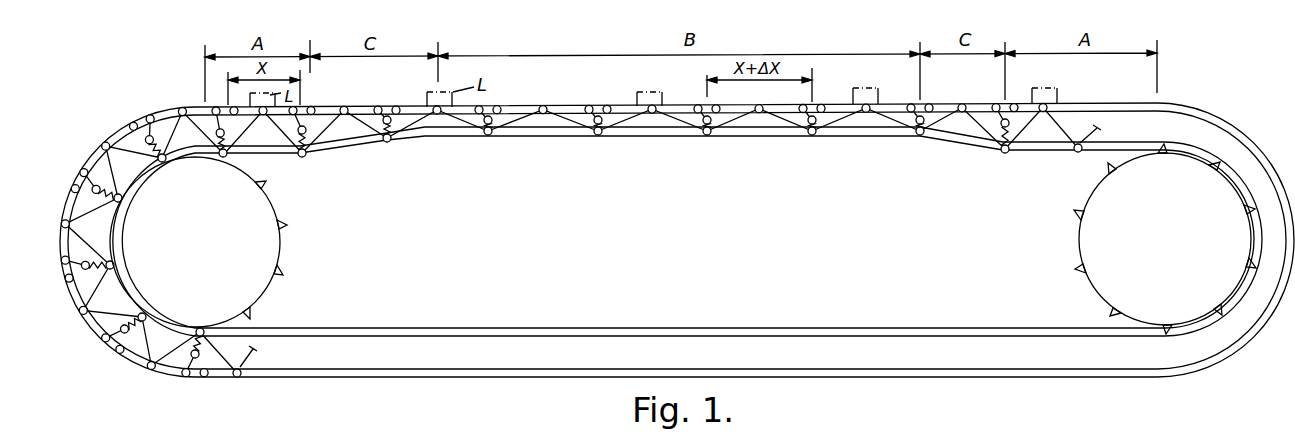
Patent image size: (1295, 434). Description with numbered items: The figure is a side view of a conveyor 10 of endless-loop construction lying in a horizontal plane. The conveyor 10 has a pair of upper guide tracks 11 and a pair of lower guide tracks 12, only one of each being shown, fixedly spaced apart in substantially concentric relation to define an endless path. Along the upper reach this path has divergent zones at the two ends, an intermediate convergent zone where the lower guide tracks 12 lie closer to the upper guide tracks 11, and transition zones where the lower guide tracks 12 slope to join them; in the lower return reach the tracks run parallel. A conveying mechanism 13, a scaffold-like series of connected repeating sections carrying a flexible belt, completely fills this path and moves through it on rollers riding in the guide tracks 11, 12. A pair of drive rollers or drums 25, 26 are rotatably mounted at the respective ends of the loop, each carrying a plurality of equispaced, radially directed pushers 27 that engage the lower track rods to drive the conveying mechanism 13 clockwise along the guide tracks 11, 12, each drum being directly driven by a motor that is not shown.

The conveyor 10 is at (677, 224).
The upper guide tracks 11 is at (490, 106).
The lower guide tracks 12 is at (457, 136).
The conveying mechanism 13 is at (570, 120).
The drive roller 25 is at (213, 226).
The drive roller 26 is at (1186, 226).
The pushers 27 is at (289, 275).